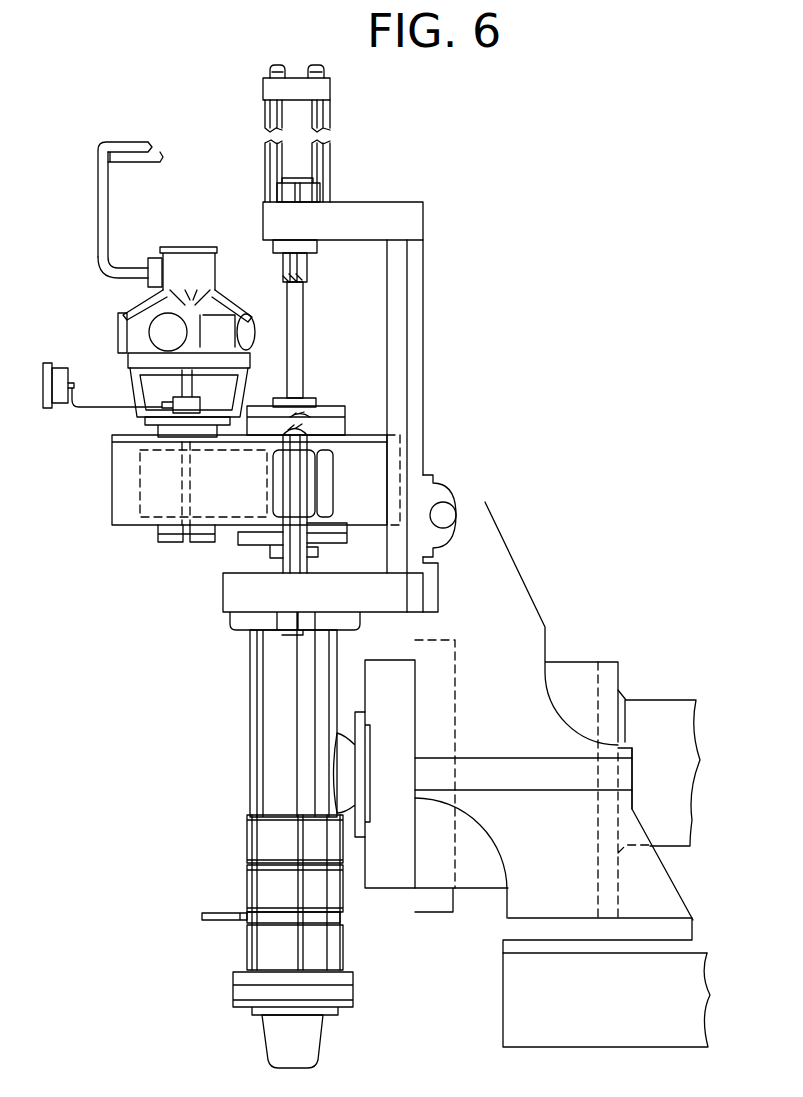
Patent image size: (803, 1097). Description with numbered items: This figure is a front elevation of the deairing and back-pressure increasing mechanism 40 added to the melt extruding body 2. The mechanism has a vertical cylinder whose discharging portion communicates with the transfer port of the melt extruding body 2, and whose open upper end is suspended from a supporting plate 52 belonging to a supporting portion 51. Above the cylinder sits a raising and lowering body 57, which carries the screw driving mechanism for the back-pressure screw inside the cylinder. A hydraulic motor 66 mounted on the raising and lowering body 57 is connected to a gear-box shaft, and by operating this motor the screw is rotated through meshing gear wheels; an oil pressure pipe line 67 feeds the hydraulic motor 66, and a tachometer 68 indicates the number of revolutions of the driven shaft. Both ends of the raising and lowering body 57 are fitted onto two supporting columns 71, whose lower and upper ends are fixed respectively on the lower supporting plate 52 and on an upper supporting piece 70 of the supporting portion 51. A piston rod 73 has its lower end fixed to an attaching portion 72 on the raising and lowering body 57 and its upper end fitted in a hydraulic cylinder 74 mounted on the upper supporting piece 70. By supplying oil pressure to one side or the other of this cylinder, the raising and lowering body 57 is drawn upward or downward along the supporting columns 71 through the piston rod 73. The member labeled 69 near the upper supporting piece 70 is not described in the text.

The melt extruding body 2 is at (637, 699).
The deairing and back-pressure increasing mechanism 40 is at (250, 690).
The supporting portion 51 is at (495, 572).
The supporting plate 52 is at (347, 590).
The raising and lowering body 57 is at (112, 473).
The hydraulic motor 66 is at (137, 310).
The oil pressure pipe line 67 is at (98, 192).
The tachometer 68 is at (48, 362).
The top plate 69 is at (332, 200).
The upper supporting piece 70 is at (392, 200).
The supporting column 71 is at (305, 272).
The attaching portion 72 is at (327, 412).
The piston rod 73 is at (297, 182).
The hydraulic cylinder 74 is at (302, 326).